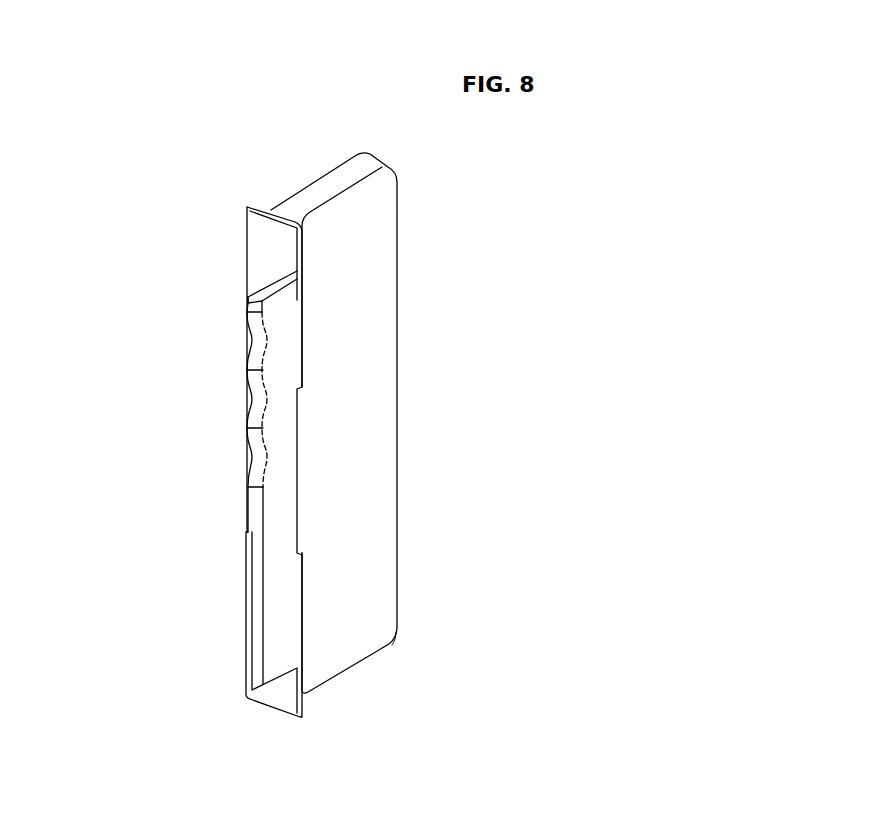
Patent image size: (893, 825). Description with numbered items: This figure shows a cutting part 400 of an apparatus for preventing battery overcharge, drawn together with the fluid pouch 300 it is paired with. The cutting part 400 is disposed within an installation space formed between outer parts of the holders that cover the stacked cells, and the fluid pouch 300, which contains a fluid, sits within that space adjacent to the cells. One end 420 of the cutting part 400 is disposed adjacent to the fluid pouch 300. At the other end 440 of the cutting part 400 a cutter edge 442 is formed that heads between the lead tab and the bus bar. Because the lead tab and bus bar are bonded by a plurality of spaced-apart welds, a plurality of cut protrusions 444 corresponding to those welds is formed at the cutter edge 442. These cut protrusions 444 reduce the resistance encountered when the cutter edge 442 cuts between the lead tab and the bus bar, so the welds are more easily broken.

The fluid pouch 300 is at (385, 317).
The cutting part 400 is at (243, 258).
The end of the cutting part 420 is at (262, 221).
The other end of the cutting part 440 is at (272, 665).
The cutter edge 442 is at (257, 460).
The cut protrusions 444 is at (248, 432).